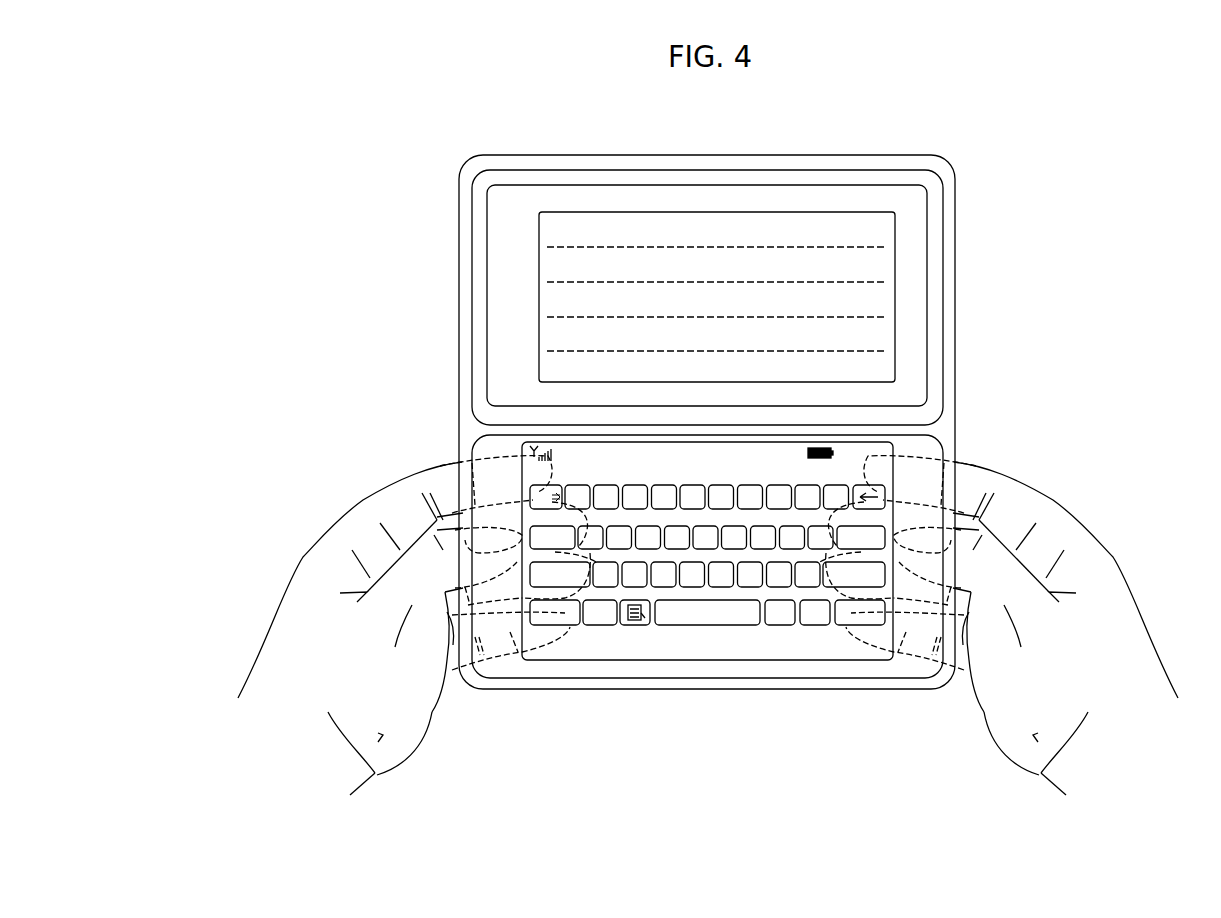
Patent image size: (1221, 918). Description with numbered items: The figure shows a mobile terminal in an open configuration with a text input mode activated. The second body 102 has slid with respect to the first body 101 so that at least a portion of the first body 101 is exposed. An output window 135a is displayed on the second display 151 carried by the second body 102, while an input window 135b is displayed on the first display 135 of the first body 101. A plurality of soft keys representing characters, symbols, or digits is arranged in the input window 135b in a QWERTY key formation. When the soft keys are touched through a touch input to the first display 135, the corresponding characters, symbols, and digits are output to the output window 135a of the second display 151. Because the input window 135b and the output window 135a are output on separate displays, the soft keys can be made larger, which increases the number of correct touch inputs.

The first body 101 is at (955, 440).
The second body 102 is at (955, 279).
The second display 151 is at (927, 225).
The first display 135 is at (708, 660).
The output window 135a is at (848, 228).
The input window 135b is at (792, 640).